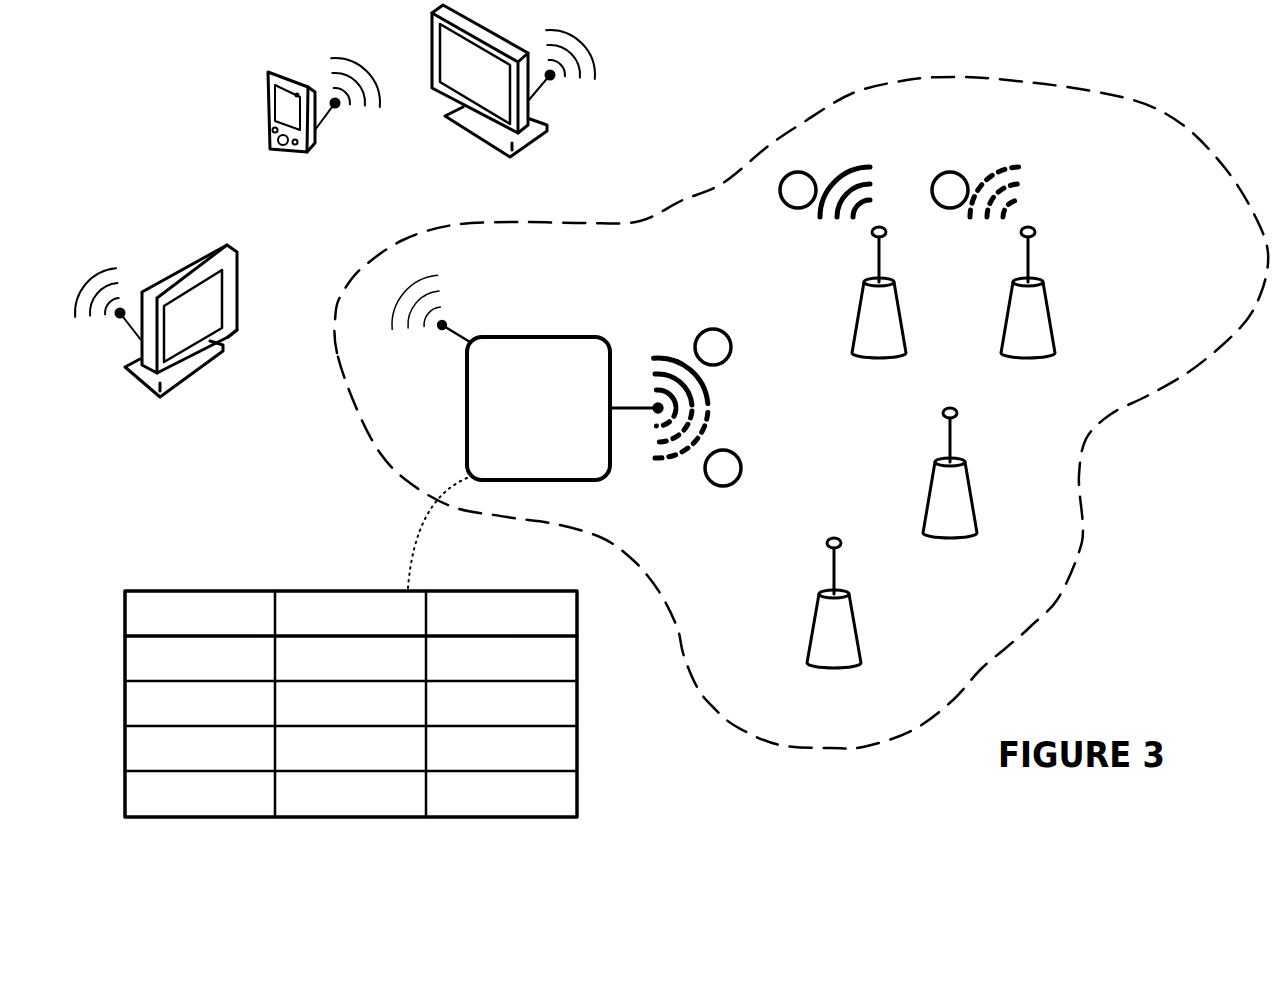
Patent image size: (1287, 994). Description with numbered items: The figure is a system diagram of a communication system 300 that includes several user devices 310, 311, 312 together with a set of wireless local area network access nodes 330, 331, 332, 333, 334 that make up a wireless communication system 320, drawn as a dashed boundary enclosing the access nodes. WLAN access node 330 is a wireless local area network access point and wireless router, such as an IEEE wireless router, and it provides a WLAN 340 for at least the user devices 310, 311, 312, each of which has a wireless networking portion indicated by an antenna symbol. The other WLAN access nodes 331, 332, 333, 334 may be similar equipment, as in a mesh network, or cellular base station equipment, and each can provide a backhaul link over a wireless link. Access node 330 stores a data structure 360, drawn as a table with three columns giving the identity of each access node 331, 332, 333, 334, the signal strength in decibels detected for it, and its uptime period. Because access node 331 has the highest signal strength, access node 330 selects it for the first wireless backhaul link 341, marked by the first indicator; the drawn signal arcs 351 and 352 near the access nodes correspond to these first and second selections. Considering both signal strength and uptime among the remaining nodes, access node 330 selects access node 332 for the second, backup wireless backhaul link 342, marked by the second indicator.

The communication system 300 is at (121, 50).
The user device 310 is at (530, 147).
The user device 311 is at (303, 152).
The user device 312 is at (188, 377).
The wireless communication system 320 is at (1102, 423).
The WLAN access node 330 is at (523, 456).
The WLAN access node 331 is at (898, 305).
The WLAN access node 332 is at (1047, 305).
The WLAN access node 333 is at (973, 497).
The WLAN access node 334 is at (857, 617).
The WLAN 340 is at (434, 273).
The first wireless backhaul link 341 is at (662, 358).
The second wireless backhaul link 342 is at (665, 472).
The first wireless signal received at access node 351 is at (860, 166).
The second wireless signal received at access node 352 is at (1012, 170).
The data structure 360 is at (577, 605).